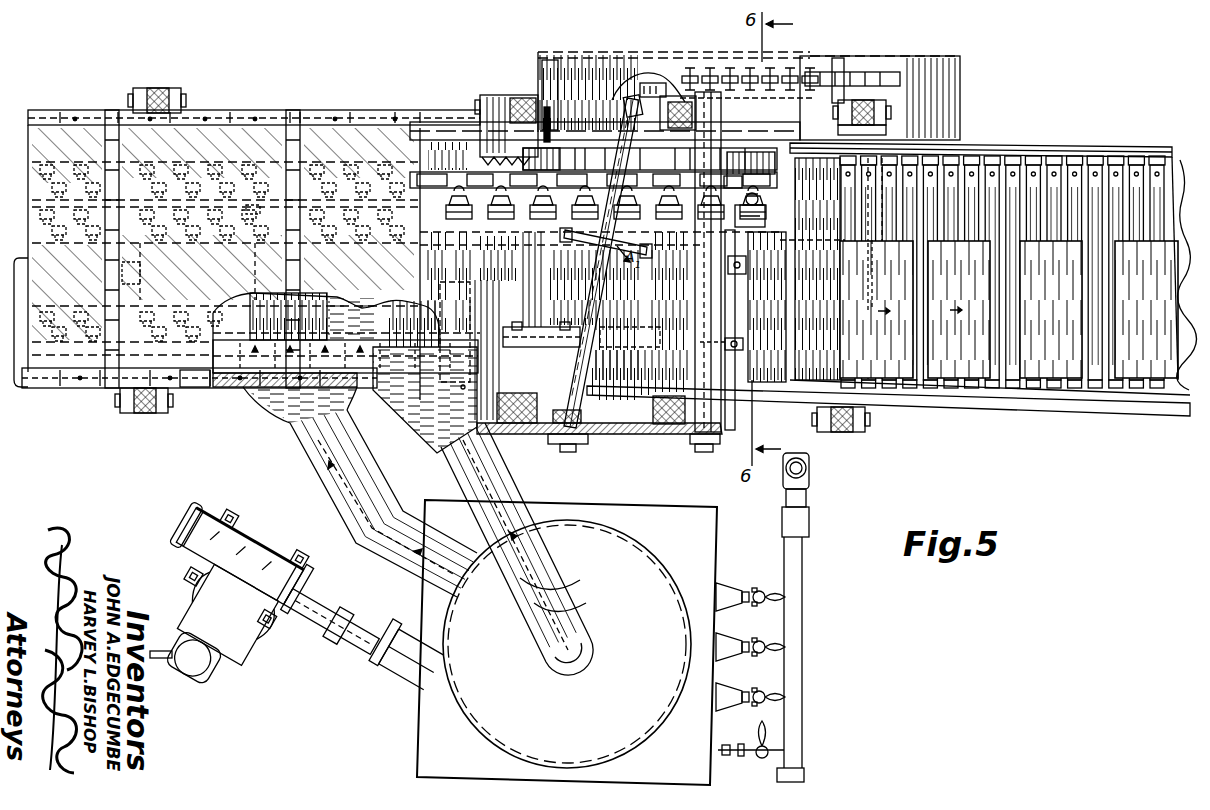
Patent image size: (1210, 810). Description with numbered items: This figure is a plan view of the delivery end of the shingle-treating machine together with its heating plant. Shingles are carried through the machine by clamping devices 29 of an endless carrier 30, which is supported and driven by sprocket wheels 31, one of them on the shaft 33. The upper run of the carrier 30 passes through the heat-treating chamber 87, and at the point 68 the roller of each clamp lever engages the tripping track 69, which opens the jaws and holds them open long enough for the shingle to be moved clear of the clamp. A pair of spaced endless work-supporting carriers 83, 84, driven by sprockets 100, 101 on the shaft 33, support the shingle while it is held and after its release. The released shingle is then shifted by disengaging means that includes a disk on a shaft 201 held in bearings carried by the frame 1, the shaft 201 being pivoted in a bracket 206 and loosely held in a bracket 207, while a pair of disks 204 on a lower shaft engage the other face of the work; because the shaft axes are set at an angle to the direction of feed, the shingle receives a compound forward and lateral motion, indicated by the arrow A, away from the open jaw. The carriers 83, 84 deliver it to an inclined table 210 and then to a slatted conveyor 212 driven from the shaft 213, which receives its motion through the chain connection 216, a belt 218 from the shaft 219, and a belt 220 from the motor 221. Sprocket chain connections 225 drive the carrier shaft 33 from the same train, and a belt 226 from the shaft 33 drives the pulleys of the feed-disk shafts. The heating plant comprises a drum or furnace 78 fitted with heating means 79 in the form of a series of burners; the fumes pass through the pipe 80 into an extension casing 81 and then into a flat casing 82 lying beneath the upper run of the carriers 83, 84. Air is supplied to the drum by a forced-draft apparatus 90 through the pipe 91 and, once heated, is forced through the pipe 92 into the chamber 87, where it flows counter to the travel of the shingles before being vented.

The frame 1 is at (145, 407).
The clamping device 29 is at (252, 210).
The endless carrier 30 is at (440, 262).
The sprocket wheel 31 is at (744, 189).
The shaft 33 is at (712, 62).
The point 68 is at (465, 262).
The tripping track 69 is at (538, 114).
The drum or furnace 78 is at (655, 590).
The heating means 79 is at (740, 591).
The pipe 80 is at (548, 588).
The extension casing 81 is at (412, 400).
The flat casing 82 is at (365, 305).
The endless work supporting carrier 83 is at (564, 328).
The endless work supporting carrier 84 is at (548, 255).
The heat-treating chamber 87 is at (233, 147).
The forced draft apparatus 90 is at (254, 548).
The pipe 91 is at (395, 670).
The pipe 92 is at (302, 449).
The sprocket 100 is at (743, 345).
The sprocket 101 is at (746, 266).
The shaft 201 is at (650, 252).
The disk 204 is at (566, 230).
The bracket 206 is at (582, 418).
The bracket 207 is at (585, 122).
The inclined table 210 is at (748, 266).
The slotted conveyor 212 is at (1012, 195).
The shaft 213 is at (840, 62).
The chain connection 216 is at (880, 74).
The belt 218 is at (776, 161).
The shaft 219 is at (560, 120).
The belt 220 is at (190, 390).
The motor 221 is at (128, 271).
The sprocket chain connections 225 is at (662, 86).
The belt 226 is at (637, 437).